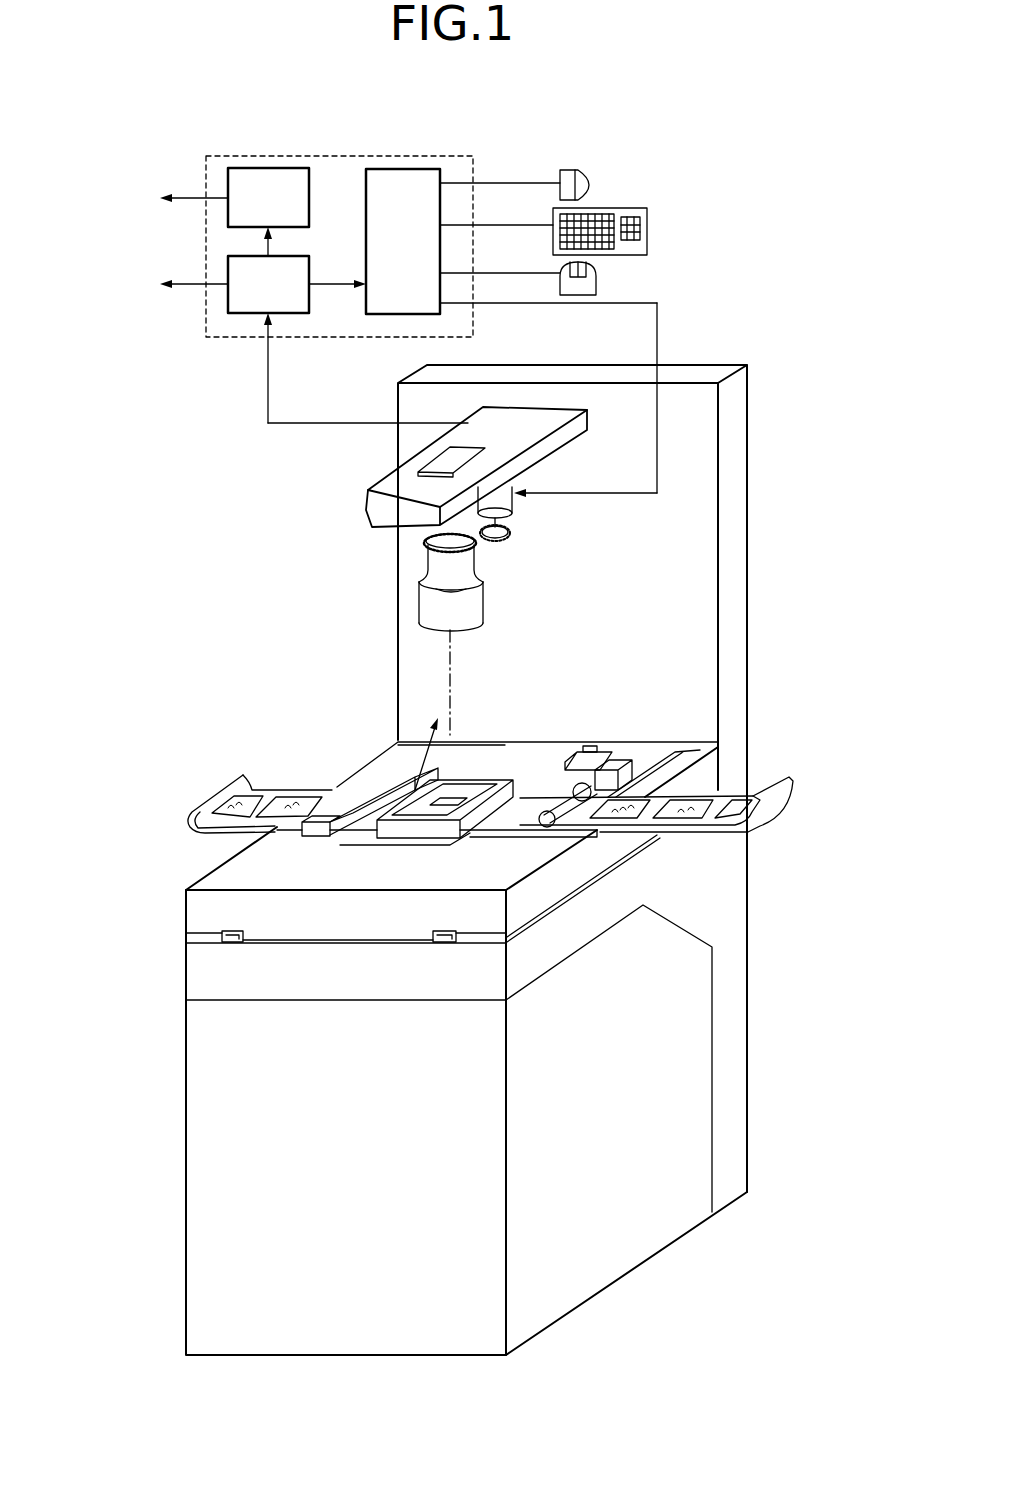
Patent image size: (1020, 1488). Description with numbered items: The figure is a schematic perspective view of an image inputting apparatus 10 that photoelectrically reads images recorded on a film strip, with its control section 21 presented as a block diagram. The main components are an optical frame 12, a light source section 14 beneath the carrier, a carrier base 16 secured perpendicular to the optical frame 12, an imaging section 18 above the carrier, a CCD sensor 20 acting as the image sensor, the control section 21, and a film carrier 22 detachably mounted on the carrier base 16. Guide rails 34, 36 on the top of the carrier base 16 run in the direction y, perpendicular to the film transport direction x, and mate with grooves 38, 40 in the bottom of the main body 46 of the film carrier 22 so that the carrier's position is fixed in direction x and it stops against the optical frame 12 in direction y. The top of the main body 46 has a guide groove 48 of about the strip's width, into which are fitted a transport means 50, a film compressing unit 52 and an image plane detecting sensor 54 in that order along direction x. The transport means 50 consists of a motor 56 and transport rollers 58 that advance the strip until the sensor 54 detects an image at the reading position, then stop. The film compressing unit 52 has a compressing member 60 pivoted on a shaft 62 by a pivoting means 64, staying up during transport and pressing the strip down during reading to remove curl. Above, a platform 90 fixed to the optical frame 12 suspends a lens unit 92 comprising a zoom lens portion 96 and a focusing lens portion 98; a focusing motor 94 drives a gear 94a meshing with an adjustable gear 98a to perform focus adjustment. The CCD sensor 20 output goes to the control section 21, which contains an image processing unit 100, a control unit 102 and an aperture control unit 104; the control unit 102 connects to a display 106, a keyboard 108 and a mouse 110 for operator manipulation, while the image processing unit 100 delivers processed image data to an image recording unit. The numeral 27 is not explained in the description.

The image inputting apparatus 10 is at (181, 517).
The optical frame 12 is at (400, 655).
The light source section 14 is at (605, 1278).
The carrier base 16 is at (605, 925).
The imaging section 18 is at (440, 559).
The CCD sensor 20 is at (420, 478).
The control section 21 is at (210, 337).
The film carrier 22 is at (317, 766).
The output 27 is at (171, 197).
The guide rail 34 is at (232, 947).
The guide rail 36 is at (443, 947).
The groove 38 is at (247, 931).
The groove 40 is at (431, 931).
The main body 46 is at (540, 905).
The guide groove 48 is at (748, 790).
The transport means 50 is at (668, 748).
The film compressing unit 52 is at (555, 724).
The image plane detecting sensor 54 is at (314, 838).
The motor 56 is at (644, 761).
The transport rollers 58 is at (545, 827).
The compressing member 60 is at (433, 834).
The shaft 62 is at (584, 744).
The pivoting means 64 is at (600, 744).
The platform 90 is at (540, 453).
The lens unit 92 is at (585, 594).
The focusing motor 94 is at (512, 500).
The gear 94a is at (505, 535).
The zoom lens portion 96 is at (485, 605).
The focusing lens portion 98 is at (470, 560).
The adjustable gear 98a is at (425, 545).
The image processing unit 100 is at (246, 297).
The control unit 102 is at (381, 254).
The aperture control unit 104 is at (246, 210).
The display 106 is at (648, 232).
The keyboard 108 is at (598, 285).
The mouse 110 is at (600, 185).